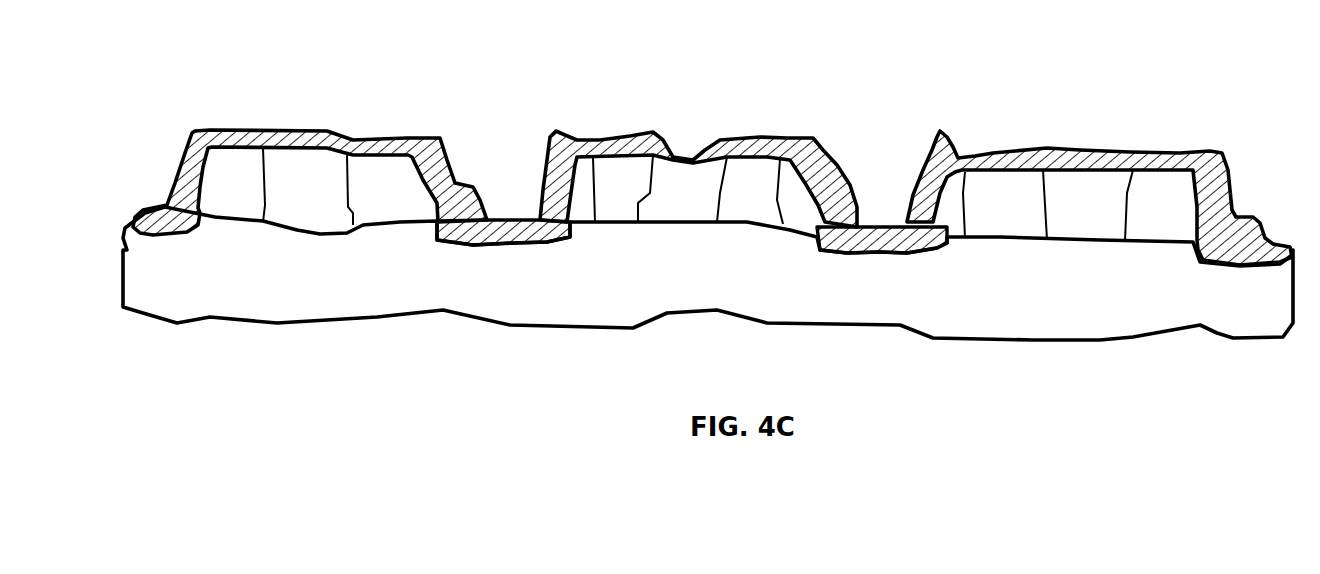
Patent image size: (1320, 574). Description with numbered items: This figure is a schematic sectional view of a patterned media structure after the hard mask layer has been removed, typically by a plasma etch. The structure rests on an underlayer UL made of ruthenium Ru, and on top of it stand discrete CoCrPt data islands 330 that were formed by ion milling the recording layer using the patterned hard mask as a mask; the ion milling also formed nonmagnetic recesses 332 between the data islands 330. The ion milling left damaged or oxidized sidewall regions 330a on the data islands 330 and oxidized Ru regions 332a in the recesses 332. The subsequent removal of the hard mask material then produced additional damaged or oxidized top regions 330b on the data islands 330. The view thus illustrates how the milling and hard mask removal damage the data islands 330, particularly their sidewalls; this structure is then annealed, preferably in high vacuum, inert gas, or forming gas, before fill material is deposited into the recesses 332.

The data islands 330 is at (373, 167).
The damaged or oxidized sidewall regions 330a is at (537, 188).
The damaged or oxidized top regions 330b is at (228, 133).
The nonmagnetic recesses 332 is at (518, 123).
The oxidized Ru regions 332a is at (463, 243).
The underlayer UL is at (708, 273).
The ruthenium Ru is at (161, 273).